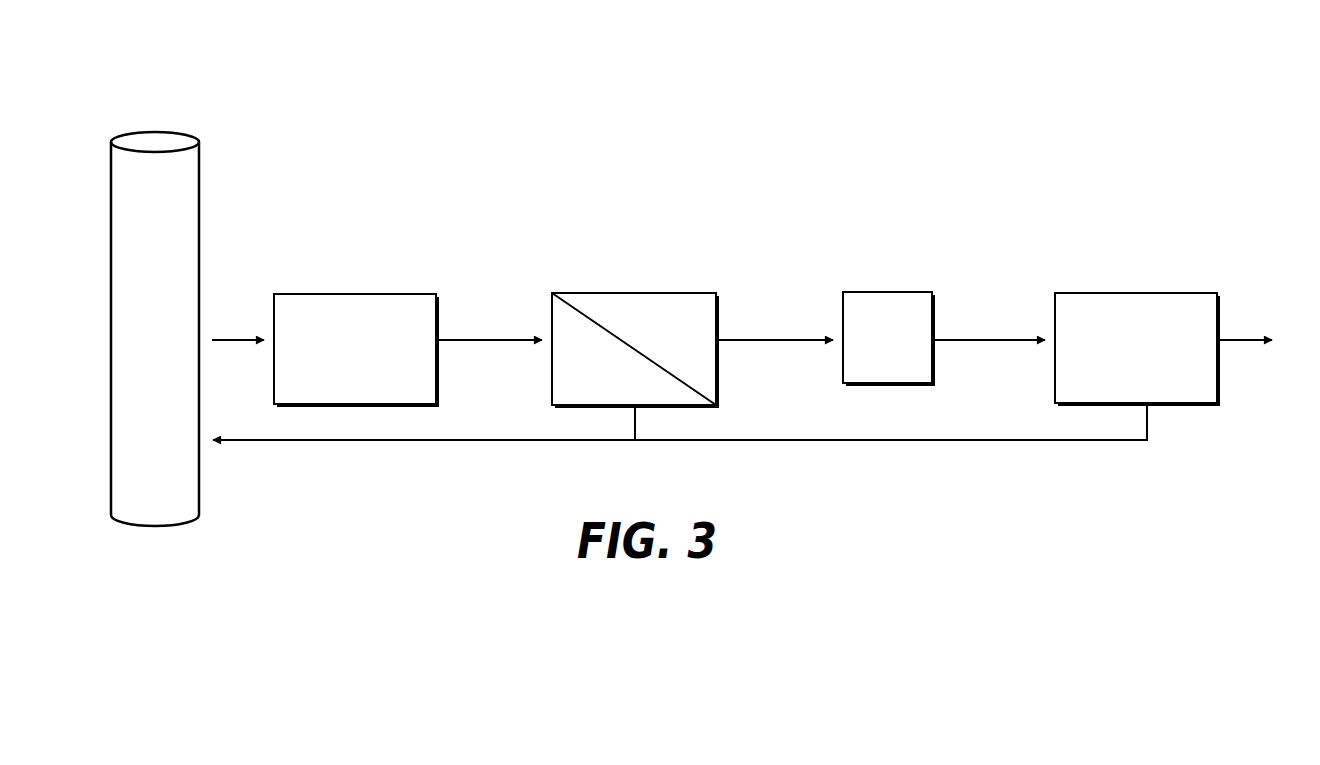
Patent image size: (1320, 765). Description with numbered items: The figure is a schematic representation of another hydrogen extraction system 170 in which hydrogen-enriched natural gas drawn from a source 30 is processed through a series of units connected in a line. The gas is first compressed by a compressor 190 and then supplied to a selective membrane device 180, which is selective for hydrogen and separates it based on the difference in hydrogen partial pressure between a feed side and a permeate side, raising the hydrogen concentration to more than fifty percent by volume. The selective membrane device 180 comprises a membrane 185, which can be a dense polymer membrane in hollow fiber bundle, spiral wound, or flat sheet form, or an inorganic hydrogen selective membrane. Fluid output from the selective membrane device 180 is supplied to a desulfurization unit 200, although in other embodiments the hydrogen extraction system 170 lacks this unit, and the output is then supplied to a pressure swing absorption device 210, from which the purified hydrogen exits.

The riser / fermentation column 30 is at (174, 121).
The hydrogen extraction system 170 is at (1026, 181).
The selective membrane device 180 is at (598, 315).
The membrane 185 is at (618, 346).
The compressor 190 is at (337, 363).
The desulfurization unit 200 is at (869, 351).
The pressure swing absorption device 210 is at (1118, 364).